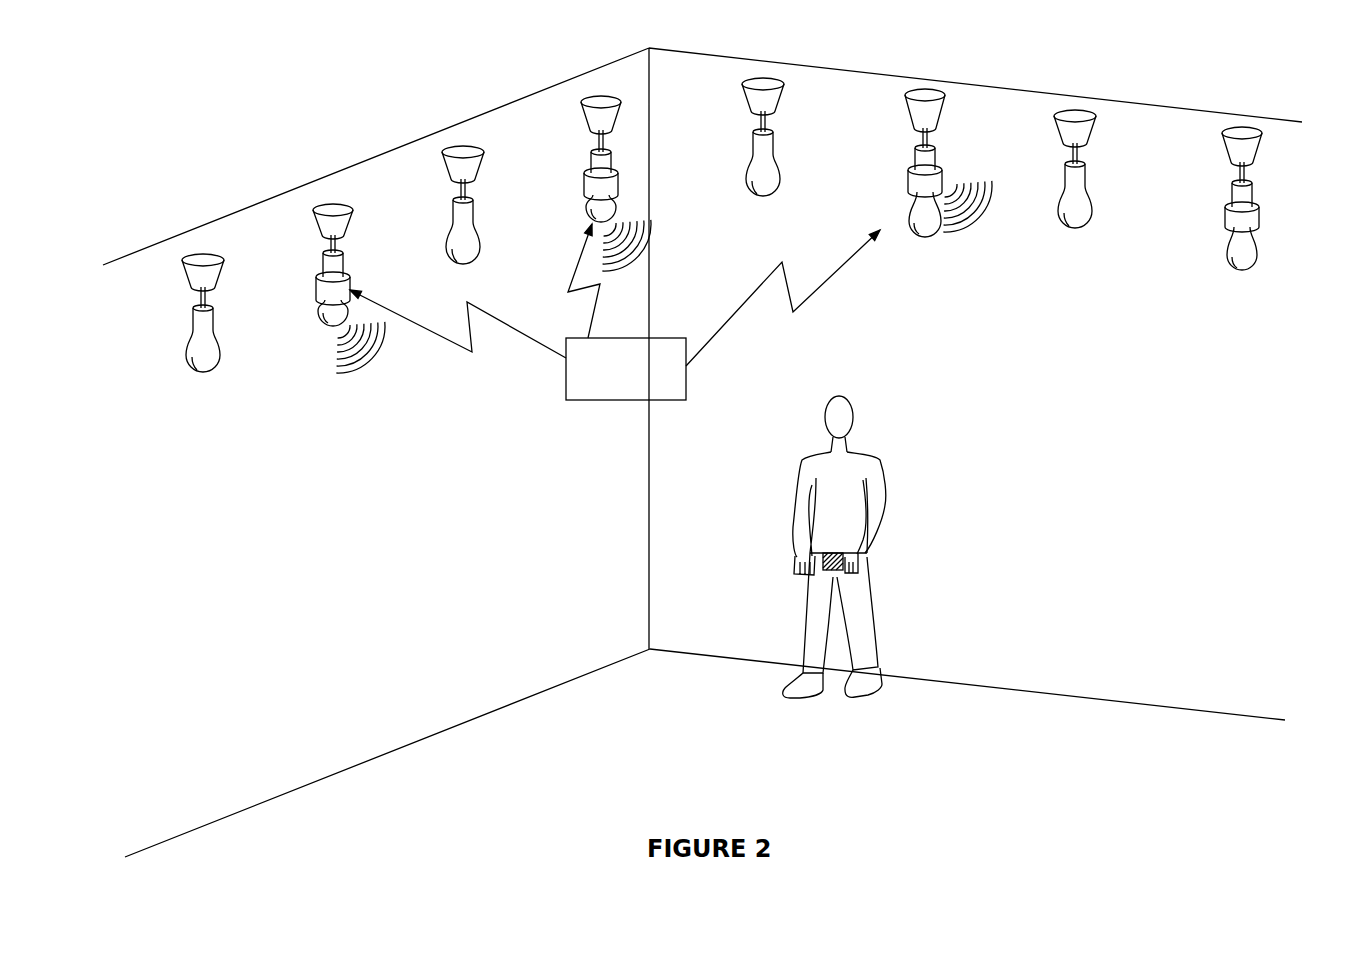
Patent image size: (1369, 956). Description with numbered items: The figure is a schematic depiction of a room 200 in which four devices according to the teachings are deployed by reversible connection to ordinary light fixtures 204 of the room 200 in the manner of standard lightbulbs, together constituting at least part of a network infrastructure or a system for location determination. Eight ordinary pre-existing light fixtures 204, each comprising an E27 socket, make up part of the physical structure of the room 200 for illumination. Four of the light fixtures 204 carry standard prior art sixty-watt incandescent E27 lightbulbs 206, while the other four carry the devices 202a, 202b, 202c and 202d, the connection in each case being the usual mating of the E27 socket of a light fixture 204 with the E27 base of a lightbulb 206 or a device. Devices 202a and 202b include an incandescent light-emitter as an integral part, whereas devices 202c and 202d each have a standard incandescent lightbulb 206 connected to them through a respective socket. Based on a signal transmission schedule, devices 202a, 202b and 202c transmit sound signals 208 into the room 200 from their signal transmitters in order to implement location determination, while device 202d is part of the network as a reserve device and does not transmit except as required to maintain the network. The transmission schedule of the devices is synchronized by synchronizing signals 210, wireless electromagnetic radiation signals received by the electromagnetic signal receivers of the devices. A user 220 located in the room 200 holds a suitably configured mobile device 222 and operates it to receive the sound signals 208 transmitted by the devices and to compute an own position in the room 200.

The room 200 is at (910, 442).
The device 202a is at (325, 318).
The device 202b is at (587, 194).
The device 202c is at (908, 183).
The device 202d is at (1225, 214).
The light fixture 204 is at (182, 270).
The lightbulb 206 is at (210, 373).
The sound signal 208 is at (373, 362).
The synchronizing signal 210 is at (457, 347).
The user 220 is at (815, 466).
The mobile device 222 is at (812, 575).